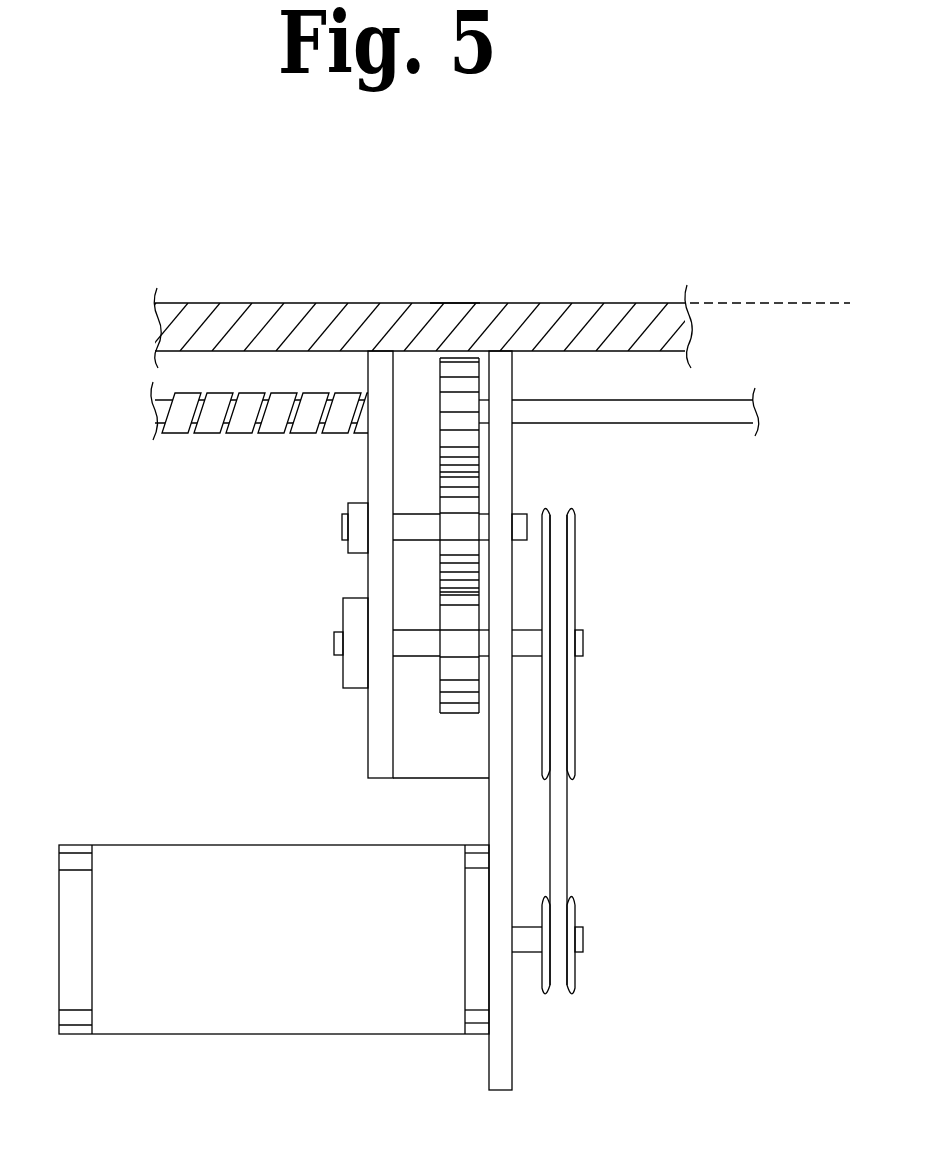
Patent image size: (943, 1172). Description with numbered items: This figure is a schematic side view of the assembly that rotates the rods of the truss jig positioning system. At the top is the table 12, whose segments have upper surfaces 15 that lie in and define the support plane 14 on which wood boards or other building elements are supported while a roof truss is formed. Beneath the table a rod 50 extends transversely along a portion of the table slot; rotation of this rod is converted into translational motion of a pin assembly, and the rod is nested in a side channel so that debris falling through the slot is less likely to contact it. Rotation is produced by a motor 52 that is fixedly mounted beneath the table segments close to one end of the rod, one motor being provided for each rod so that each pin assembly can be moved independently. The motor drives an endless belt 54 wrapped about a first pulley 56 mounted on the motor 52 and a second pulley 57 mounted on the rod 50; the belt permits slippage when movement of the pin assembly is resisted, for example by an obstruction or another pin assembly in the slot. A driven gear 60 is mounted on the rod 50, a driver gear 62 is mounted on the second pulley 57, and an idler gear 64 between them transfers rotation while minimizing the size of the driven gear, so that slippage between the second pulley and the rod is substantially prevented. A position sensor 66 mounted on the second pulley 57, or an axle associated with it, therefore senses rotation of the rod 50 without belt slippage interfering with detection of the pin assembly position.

The table 12 is at (228, 322).
The support plane 14 is at (807, 302).
The upper surface 15 is at (453, 302).
The rod 50 is at (647, 413).
The motor 52 is at (150, 892).
The endless belt 54 is at (560, 853).
The first pulley 56 is at (573, 976).
The second pulley 57 is at (573, 711).
The driven gear 60 is at (455, 439).
The driver gear 62 is at (452, 693).
The idler gear 64 is at (453, 547).
The position sensor 66 is at (353, 663).